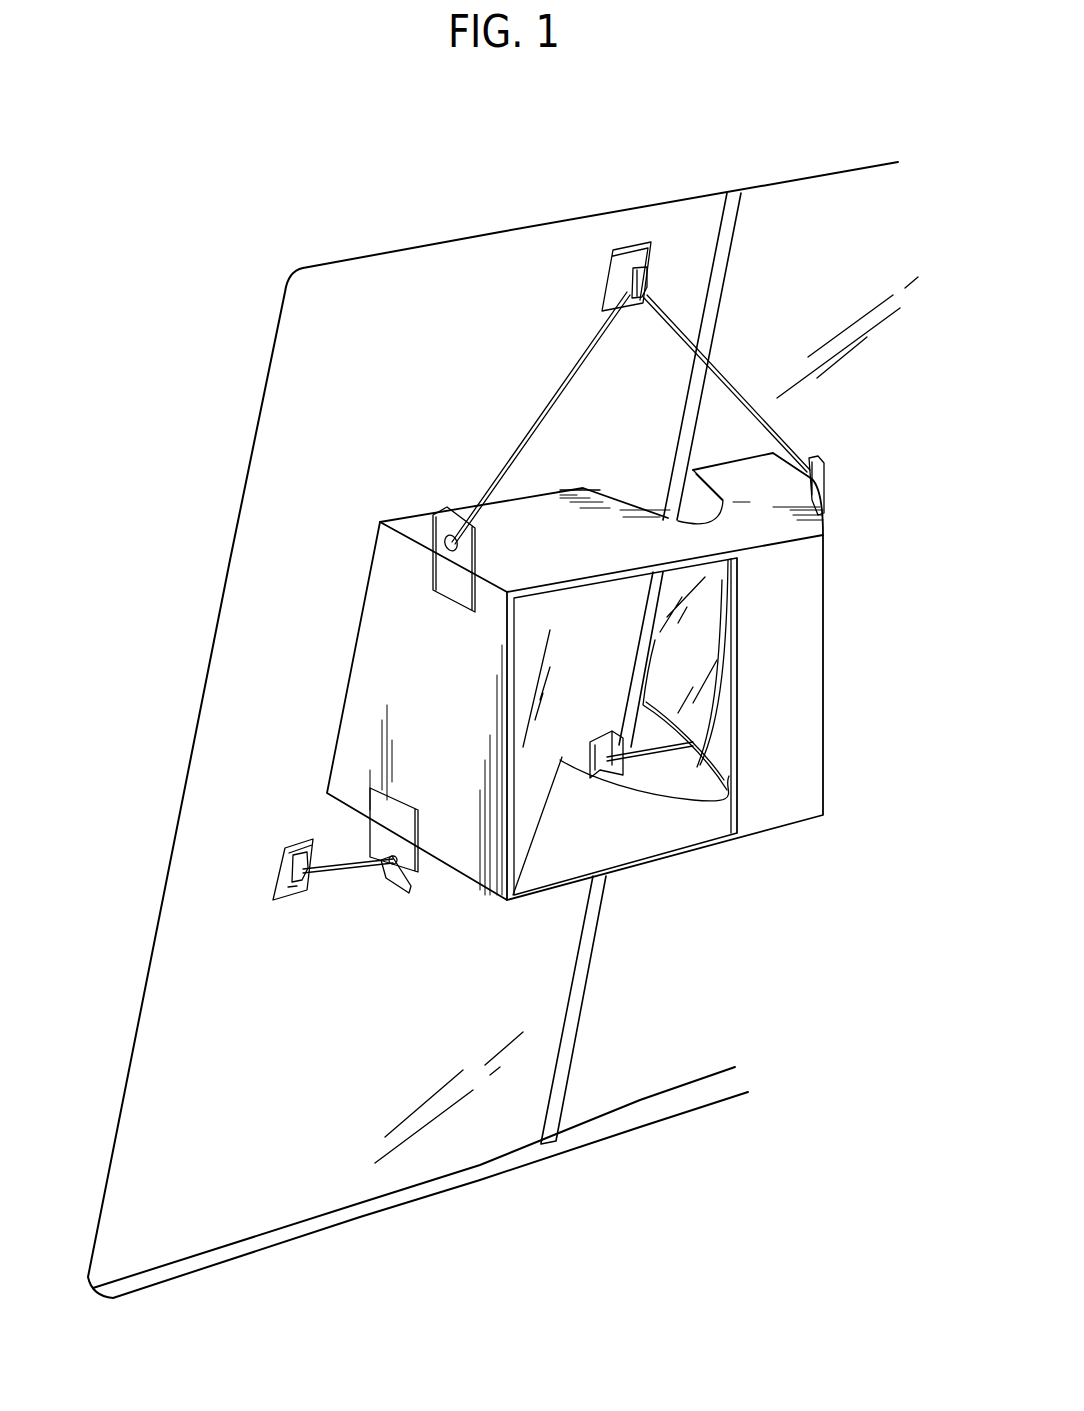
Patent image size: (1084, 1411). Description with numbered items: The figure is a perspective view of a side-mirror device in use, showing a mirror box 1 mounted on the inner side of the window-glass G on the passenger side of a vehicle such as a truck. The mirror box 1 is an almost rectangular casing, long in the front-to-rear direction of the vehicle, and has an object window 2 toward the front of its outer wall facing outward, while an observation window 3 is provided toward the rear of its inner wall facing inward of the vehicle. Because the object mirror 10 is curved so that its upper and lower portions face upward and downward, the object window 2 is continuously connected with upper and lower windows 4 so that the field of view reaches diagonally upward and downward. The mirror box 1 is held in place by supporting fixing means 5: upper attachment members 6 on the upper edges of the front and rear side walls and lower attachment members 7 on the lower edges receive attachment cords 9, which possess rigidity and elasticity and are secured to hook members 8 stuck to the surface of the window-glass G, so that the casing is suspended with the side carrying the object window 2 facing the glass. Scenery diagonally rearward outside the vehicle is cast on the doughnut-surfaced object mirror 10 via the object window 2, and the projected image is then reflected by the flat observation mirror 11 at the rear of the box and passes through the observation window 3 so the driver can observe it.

The window-glass G is at (401, 275).
The mirror box 1 is at (804, 766).
The object window 2 is at (681, 487).
The observation window 3 is at (722, 812).
The upper and lower windows 4 is at (605, 495).
The supporting fixing means 5 is at (348, 893).
The upper attachment members 6 is at (438, 530).
The lower attachment members 7 is at (410, 858).
The hook members 8 is at (612, 295).
The attachment cords 9 is at (535, 412).
The object mirror 10 is at (703, 637).
The observation mirror 11 is at (533, 797).